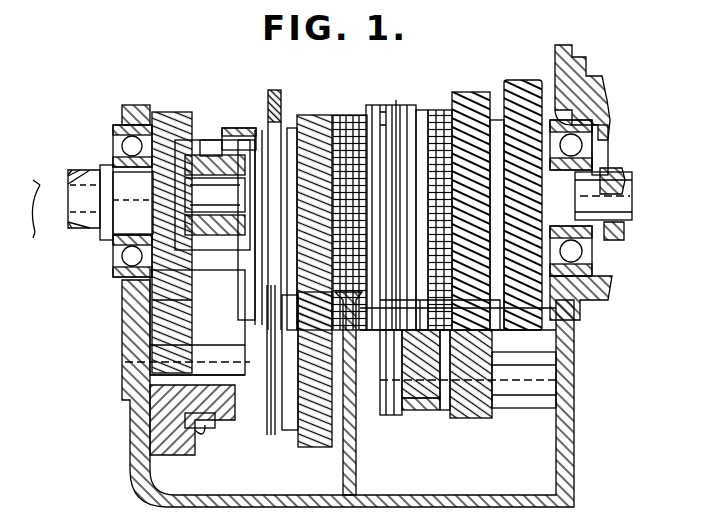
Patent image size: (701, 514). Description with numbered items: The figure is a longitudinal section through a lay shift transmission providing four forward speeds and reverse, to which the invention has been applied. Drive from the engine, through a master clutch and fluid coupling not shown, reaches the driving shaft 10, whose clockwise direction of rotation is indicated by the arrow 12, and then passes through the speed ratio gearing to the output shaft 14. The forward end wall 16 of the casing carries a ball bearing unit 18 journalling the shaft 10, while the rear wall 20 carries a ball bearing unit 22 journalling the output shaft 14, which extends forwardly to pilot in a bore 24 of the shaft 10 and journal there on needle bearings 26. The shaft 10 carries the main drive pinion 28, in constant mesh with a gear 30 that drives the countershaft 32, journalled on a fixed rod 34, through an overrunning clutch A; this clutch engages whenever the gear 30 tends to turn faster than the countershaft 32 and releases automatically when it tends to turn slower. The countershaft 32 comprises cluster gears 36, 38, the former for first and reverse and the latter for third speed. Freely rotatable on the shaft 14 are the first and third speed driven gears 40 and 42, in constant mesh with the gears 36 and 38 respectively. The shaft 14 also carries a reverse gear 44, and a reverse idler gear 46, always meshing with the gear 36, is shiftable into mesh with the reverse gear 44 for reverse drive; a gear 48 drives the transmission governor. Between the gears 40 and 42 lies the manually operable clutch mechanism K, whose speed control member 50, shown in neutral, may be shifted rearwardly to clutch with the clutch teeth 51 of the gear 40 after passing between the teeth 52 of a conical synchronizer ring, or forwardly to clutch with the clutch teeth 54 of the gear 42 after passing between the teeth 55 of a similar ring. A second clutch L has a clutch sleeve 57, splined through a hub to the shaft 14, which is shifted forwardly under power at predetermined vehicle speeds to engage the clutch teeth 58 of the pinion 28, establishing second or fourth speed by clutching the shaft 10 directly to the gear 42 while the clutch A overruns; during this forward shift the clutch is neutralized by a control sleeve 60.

The driving shaft 10 is at (70, 235).
The arrow 12 is at (61, 202).
The output shaft 14 is at (645, 190).
The forward end wall 16 is at (135, 318).
The ball bearing unit 18 is at (112, 128).
The rear wall 20 is at (566, 432).
The ball bearing unit 22 is at (590, 140).
The bore 24 is at (155, 213).
The needle bearings 26 is at (212, 195).
The main drive pinion 28 is at (170, 150).
The gear 30 is at (172, 458).
The countershaft 32 is at (360, 400).
The fixed rod 34 is at (150, 360).
The cluster gear 36 is at (482, 410).
The cluster gear 38 is at (320, 447).
The first speed driven gear 40 is at (472, 92).
The third speed driven gear 42 is at (312, 120).
The reverse gear 44 is at (523, 85).
The reverse idler gear 46 is at (428, 410).
The gear 48 is at (400, 415).
The speed control member 50 is at (388, 112).
The clutch teeth 51 is at (445, 112).
The teeth 52 is at (424, 115).
The clutch teeth 54 is at (342, 120).
The teeth 55 is at (395, 110).
The clutch sleeve 57 is at (236, 140).
The clutch teeth 58 is at (212, 142).
The control sleeve 60 is at (270, 435).
The second clutch L is at (262, 125).
The manually operable clutch mechanism K is at (398, 100).
The overrunning clutch A is at (205, 432).